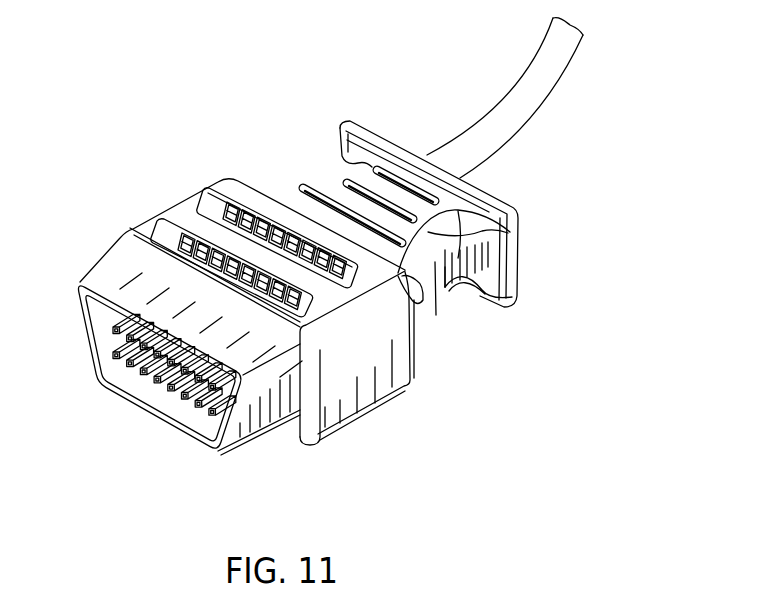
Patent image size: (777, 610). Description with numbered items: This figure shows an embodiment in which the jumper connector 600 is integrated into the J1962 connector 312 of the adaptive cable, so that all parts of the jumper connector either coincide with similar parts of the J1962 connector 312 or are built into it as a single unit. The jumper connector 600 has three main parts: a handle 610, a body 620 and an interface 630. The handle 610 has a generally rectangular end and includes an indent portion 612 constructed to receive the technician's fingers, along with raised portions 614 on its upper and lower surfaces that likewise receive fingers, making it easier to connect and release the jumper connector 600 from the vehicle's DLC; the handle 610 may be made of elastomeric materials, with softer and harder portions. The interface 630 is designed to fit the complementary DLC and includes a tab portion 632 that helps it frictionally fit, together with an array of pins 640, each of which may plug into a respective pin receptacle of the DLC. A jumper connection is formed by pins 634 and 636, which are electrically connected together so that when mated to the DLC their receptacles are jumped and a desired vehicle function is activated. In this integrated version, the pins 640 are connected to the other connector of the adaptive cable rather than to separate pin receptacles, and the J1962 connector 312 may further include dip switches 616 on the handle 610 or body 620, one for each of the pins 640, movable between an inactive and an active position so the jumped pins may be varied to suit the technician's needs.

The jumper connector 600 is at (172, 63).
The J1962 connector 312 is at (567, 65).
The handle 610 is at (384, 132).
The indent portion 612 is at (452, 290).
The raised portions 614 is at (493, 232).
The dip switches 616 is at (197, 222).
The body 620 is at (285, 433).
The interface 630 is at (140, 410).
The tab portion 632 is at (112, 328).
The pin 634 is at (143, 372).
The pin 636 is at (200, 410).
The array of pins 640 is at (97, 323).